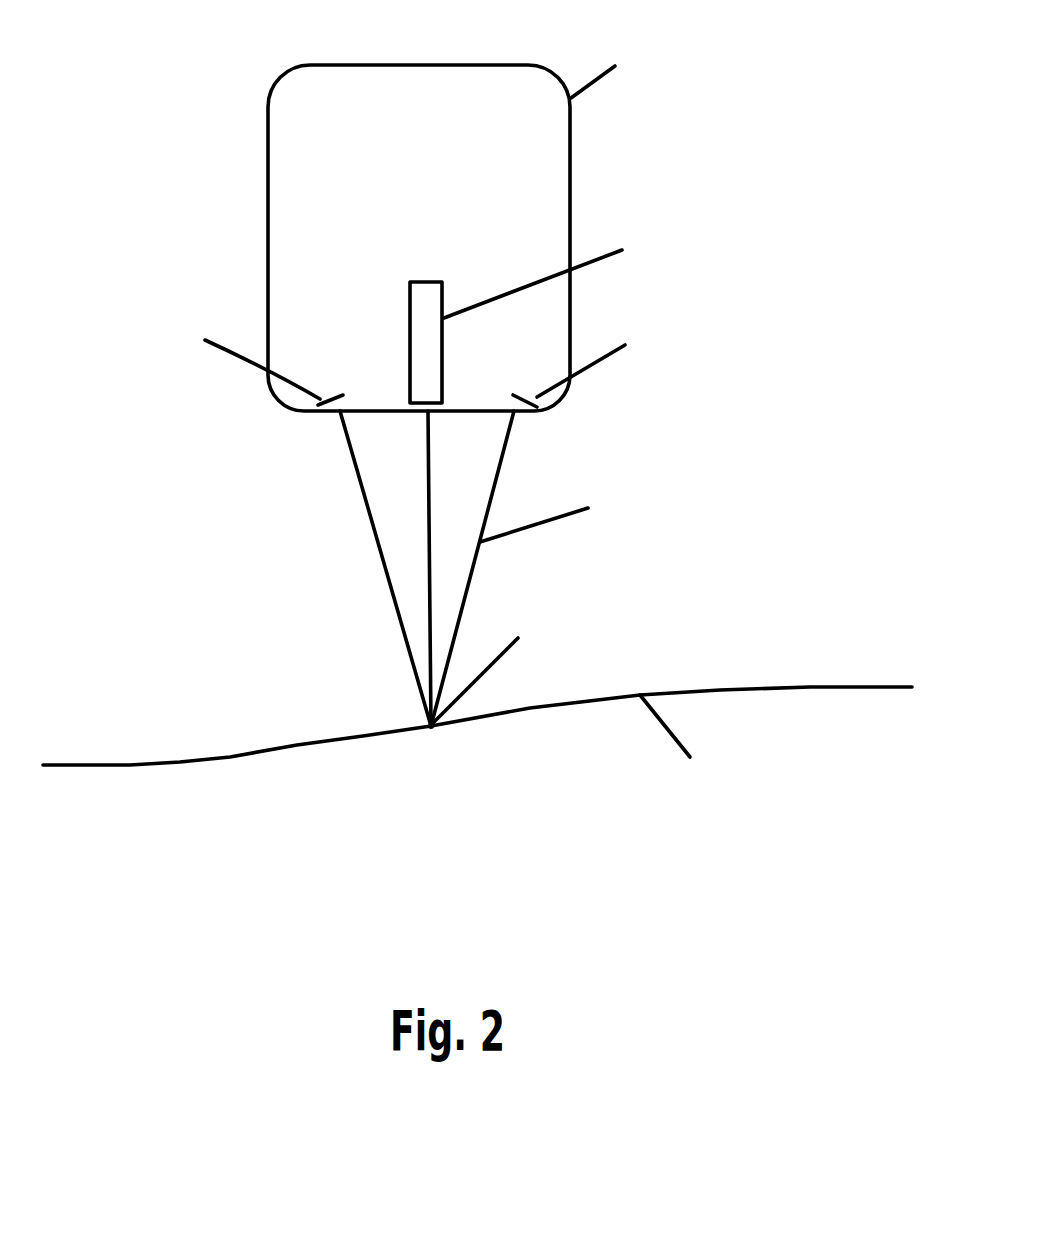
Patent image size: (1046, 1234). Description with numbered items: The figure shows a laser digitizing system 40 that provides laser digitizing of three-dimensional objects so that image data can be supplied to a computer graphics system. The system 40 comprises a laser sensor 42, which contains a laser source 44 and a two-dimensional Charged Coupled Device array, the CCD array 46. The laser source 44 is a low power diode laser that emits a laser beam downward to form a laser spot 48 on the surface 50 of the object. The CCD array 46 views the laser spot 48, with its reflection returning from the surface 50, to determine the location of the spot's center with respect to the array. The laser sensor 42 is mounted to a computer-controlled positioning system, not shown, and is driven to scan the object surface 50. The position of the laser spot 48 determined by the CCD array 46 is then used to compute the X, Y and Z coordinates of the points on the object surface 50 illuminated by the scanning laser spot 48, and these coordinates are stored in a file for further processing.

The laser digitizing system 40 is at (131, 48).
The laser sensor 42 is at (459, 64).
The laser source 44 is at (410, 318).
The CCD array 46 is at (332, 398).
The laser spot 48 is at (432, 727).
The object surface 50 is at (810, 686).